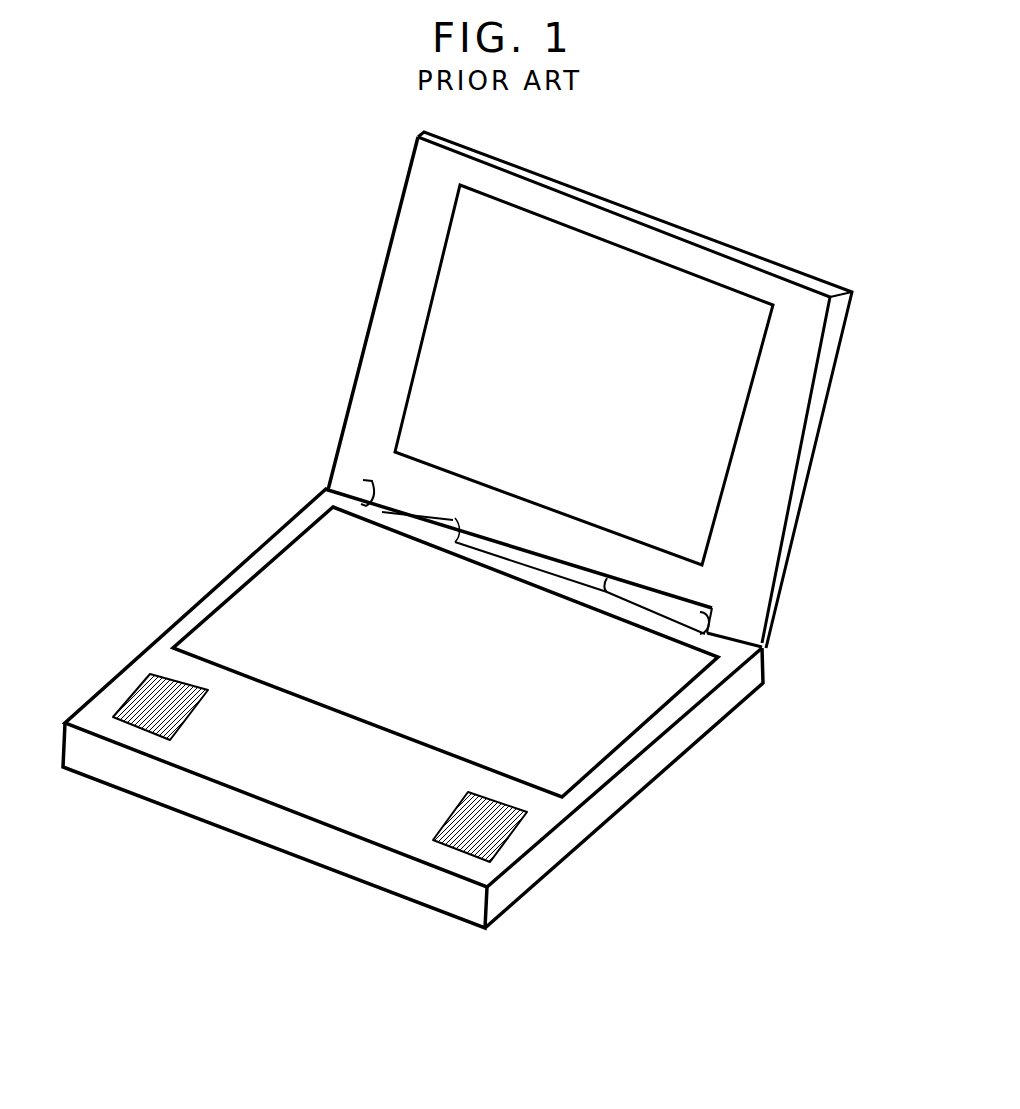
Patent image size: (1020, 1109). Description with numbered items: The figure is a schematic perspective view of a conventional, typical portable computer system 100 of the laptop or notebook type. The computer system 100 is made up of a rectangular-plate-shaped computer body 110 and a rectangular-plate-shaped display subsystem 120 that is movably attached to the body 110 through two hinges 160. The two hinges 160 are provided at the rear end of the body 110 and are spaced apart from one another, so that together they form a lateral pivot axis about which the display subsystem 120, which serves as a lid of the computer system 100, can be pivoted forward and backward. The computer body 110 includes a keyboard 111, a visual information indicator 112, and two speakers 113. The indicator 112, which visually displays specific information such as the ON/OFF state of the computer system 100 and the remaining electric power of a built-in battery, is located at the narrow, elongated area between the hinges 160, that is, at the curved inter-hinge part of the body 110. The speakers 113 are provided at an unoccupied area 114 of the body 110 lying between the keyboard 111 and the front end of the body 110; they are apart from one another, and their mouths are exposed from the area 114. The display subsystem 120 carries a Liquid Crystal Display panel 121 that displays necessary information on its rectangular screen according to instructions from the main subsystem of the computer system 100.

The portable computer system 100 is at (233, 858).
The computer body 110 is at (586, 812).
The keyboard 111 is at (600, 722).
The visual information indicator 112 is at (470, 540).
The speakers 113 is at (118, 712).
The unoccupied area 114 is at (253, 712).
The display subsystem 120 is at (364, 353).
The Liquid Crystal Display (LCD) panel 121 is at (450, 307).
The hinges 160 is at (360, 490).